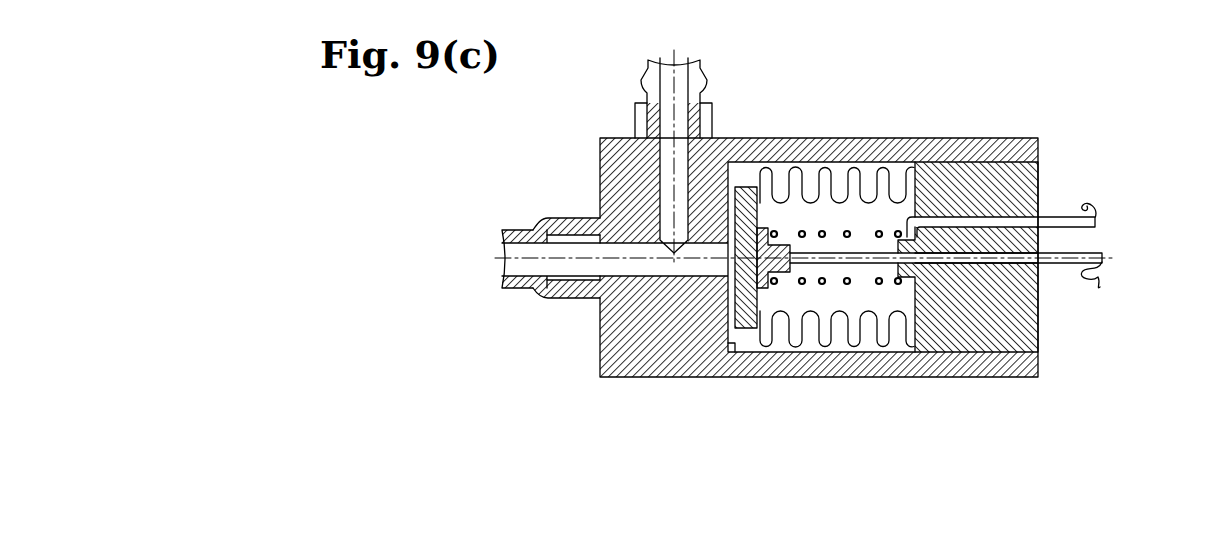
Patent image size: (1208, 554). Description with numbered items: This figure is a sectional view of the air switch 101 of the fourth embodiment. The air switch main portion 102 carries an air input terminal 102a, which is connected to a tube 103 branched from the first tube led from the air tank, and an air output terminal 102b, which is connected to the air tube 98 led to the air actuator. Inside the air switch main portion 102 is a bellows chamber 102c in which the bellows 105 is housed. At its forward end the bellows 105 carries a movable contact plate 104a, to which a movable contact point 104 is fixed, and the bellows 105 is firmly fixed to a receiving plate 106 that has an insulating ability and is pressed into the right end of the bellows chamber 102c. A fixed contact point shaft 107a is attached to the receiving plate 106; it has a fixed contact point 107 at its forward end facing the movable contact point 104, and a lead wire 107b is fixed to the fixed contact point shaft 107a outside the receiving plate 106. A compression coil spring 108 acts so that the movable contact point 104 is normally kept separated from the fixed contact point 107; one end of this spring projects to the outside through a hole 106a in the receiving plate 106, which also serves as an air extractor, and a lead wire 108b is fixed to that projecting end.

The air tube 98 is at (682, 68).
The air switch 101 is at (873, 136).
The air switch main portion 102 is at (641, 352).
The air input terminal 102a is at (577, 300).
The air output terminal 102b is at (708, 103).
The bellows chamber 102c is at (733, 345).
The tube 103 is at (505, 290).
The movable contact point 104 is at (789, 247).
The movable contact plate 104a is at (752, 343).
The bellows 105 is at (890, 345).
The receiving plate 106 is at (1000, 172).
The hole 106a is at (1038, 188).
The fixed contact point 107 is at (802, 270).
The fixed contact point shaft 107a is at (1037, 266).
The lead wire 107b is at (1100, 287).
The compression coil spring 108 is at (880, 232).
The lead wire 108b is at (1086, 204).